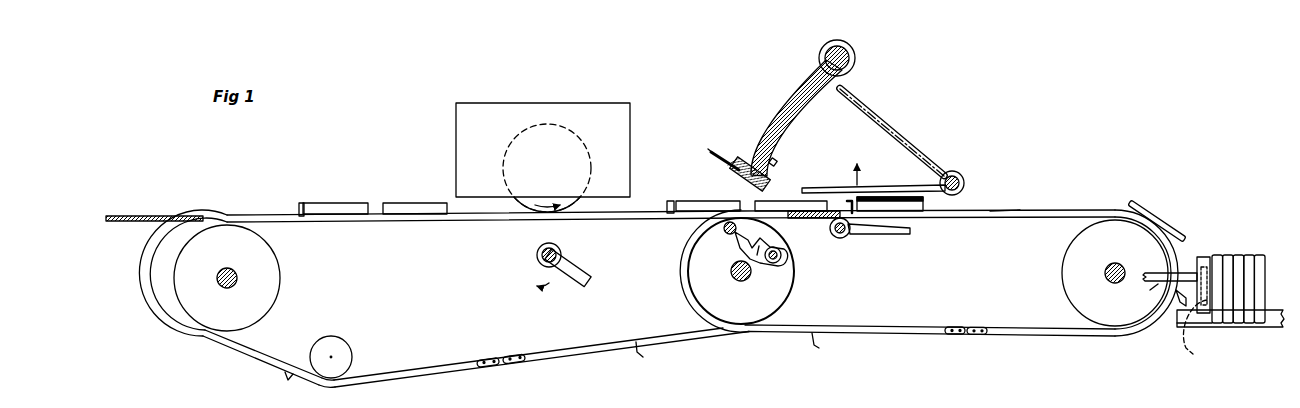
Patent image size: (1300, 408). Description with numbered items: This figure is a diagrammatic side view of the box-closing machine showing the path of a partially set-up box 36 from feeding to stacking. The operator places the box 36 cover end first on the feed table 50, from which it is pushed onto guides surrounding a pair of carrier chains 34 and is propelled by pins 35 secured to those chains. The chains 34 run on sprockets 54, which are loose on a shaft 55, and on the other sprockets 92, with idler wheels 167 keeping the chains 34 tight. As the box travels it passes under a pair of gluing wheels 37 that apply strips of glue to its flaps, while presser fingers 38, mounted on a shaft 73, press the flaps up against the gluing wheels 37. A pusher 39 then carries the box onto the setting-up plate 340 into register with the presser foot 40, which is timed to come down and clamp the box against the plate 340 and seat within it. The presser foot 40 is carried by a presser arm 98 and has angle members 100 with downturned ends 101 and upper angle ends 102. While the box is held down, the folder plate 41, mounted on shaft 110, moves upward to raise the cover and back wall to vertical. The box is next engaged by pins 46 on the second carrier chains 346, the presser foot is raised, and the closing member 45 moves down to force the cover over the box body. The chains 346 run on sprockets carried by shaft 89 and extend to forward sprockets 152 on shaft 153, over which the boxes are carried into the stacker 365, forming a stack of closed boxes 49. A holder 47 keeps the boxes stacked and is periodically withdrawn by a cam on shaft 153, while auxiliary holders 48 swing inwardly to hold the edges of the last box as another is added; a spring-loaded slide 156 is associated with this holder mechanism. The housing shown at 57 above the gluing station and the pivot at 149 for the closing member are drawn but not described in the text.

The carrier chains 34 is at (397, 224).
The positioning pins 35 is at (298, 209).
The partially set-up box 36 is at (396, 203).
The gluing wheels 37 is at (520, 201).
The presser fingers 38 is at (587, 285).
The pusher 39 is at (727, 235).
The presser foot 40 is at (751, 168).
The folder plate 41 is at (888, 235).
The closing member 45 is at (881, 188).
The pins 46 is at (850, 201).
The holder 47 is at (1200, 257).
The auxiliary holders 48 is at (1193, 356).
The stack of closed boxes 49 is at (1240, 255).
The feed table 50 is at (152, 215).
The sprockets 54 is at (271, 263).
The shaft 55 is at (238, 278).
The housing 57 is at (589, 104).
The shaft 73 is at (536, 256).
The shaft 89 is at (740, 281).
The sprockets 92 is at (687, 288).
The presser arm 98 is at (772, 103).
The angle members 100 is at (728, 165).
The downturned ends 101 is at (708, 152).
The upper angle ends 102 is at (776, 159).
The shaft 110 is at (841, 239).
The pivot 149 is at (965, 182).
The forward sprockets 152 is at (1073, 286).
The shaft 153 is at (1106, 272).
The slide 156 is at (1155, 288).
The idler wheels 167 is at (345, 349).
The setting-up plate 340 is at (810, 218).
The carrier chains 346 is at (1003, 217).
The stacker 365 is at (1240, 328).